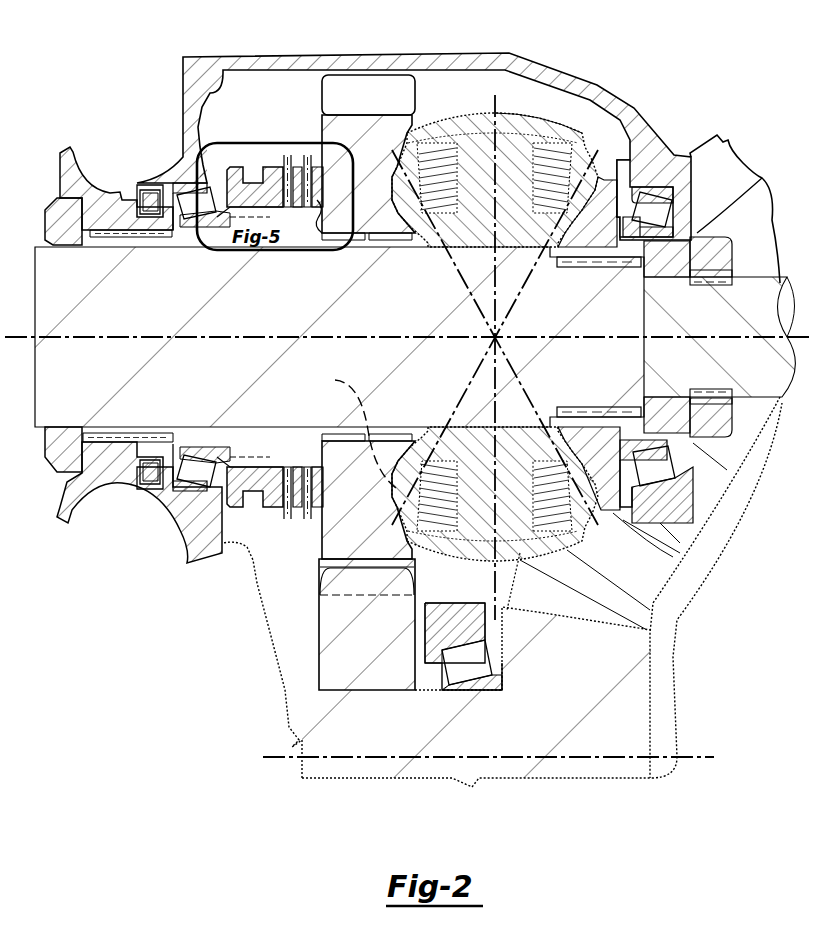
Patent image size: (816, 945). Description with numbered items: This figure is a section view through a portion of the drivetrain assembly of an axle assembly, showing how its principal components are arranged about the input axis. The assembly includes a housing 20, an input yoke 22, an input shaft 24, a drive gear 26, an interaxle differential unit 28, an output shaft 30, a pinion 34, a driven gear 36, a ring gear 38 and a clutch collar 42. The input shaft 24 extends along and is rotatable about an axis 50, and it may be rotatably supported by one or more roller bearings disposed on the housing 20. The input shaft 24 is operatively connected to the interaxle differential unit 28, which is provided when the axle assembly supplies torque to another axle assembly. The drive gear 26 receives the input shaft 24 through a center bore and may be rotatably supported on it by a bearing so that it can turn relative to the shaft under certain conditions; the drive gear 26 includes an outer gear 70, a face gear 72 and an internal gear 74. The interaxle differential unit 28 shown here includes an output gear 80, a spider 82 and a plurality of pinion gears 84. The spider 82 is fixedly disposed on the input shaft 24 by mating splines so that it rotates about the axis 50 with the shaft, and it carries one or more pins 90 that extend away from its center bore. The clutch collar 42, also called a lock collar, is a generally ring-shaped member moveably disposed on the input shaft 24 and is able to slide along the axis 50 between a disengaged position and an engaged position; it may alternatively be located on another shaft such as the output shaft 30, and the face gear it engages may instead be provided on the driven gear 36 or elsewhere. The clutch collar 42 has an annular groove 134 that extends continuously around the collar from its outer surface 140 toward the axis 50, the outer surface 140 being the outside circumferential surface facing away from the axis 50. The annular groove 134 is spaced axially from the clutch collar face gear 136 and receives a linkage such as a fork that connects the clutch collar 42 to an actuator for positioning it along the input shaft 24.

The housing 20 is at (215, 56).
The input yoke 22 is at (65, 487).
The input shaft 24 is at (311, 311).
The drive gear 26 is at (322, 120).
The interaxle differential unit 28 is at (560, 116).
The output shaft 30 is at (742, 317).
The pinion 34 is at (300, 740).
The driven gear 36 is at (318, 600).
The ring gear 38 is at (644, 583).
The clutch collar 42 is at (233, 165).
The axis 50 is at (288, 338).
The outer gear 70 is at (360, 75).
The face gear 72 is at (303, 507).
The internal gear 74 is at (354, 428).
The output gear 80 is at (612, 160).
The spider 82 is at (515, 145).
The pinion gears 84 is at (440, 150).
The pins 90 is at (535, 172).
The annular groove 134 is at (258, 496).
The clutch collar face gear 136 is at (287, 503).
The outer surface 140 is at (512, 757).